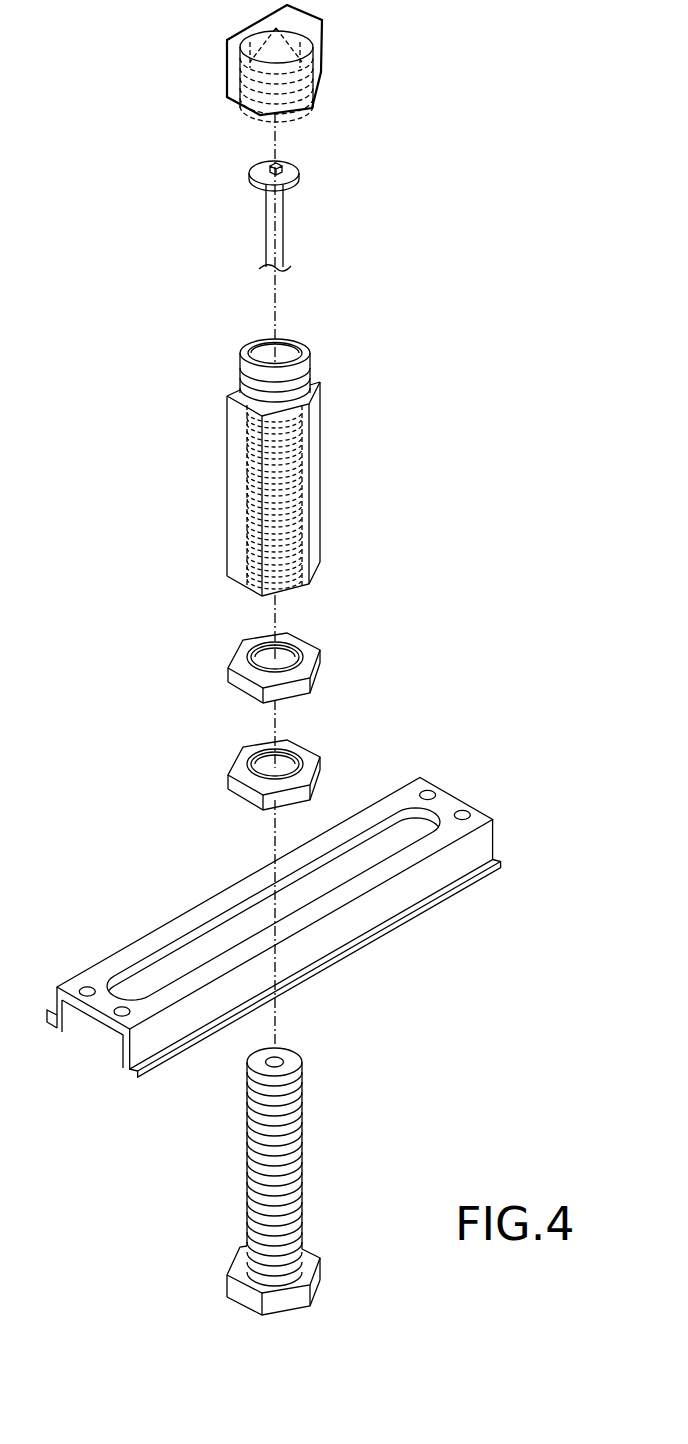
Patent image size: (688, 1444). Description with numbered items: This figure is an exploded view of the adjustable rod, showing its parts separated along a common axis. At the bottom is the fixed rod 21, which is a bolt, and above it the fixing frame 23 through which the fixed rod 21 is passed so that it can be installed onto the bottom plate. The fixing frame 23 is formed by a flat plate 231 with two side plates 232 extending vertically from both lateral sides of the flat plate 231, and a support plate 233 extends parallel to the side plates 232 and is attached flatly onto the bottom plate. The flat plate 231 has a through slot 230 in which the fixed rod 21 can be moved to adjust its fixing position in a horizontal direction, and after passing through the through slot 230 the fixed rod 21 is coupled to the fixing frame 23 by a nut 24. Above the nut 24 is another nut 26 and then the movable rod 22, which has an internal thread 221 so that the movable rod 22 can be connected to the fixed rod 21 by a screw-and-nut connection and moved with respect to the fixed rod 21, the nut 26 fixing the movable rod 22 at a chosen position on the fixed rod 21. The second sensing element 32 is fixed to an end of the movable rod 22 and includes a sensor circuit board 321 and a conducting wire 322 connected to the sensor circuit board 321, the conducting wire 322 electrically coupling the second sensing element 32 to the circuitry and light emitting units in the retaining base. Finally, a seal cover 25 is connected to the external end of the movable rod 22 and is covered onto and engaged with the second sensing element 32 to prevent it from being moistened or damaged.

The fixed rod 21 is at (302, 1163).
The movable rod 22 is at (337, 467).
The internal thread 221 is at (307, 527).
The fixing frame 23 is at (291, 889).
The through slot 230 is at (165, 948).
The flat plate 231 is at (218, 903).
The side plates 232 is at (347, 922).
The support plate 233 is at (422, 907).
The nut 24 is at (310, 760).
The seal cover 25 is at (313, 57).
The nut 26 is at (308, 650).
The second sensing element 32 is at (335, 187).
The sensor circuit board 321 is at (300, 170).
The conducting wire 322 is at (283, 232).